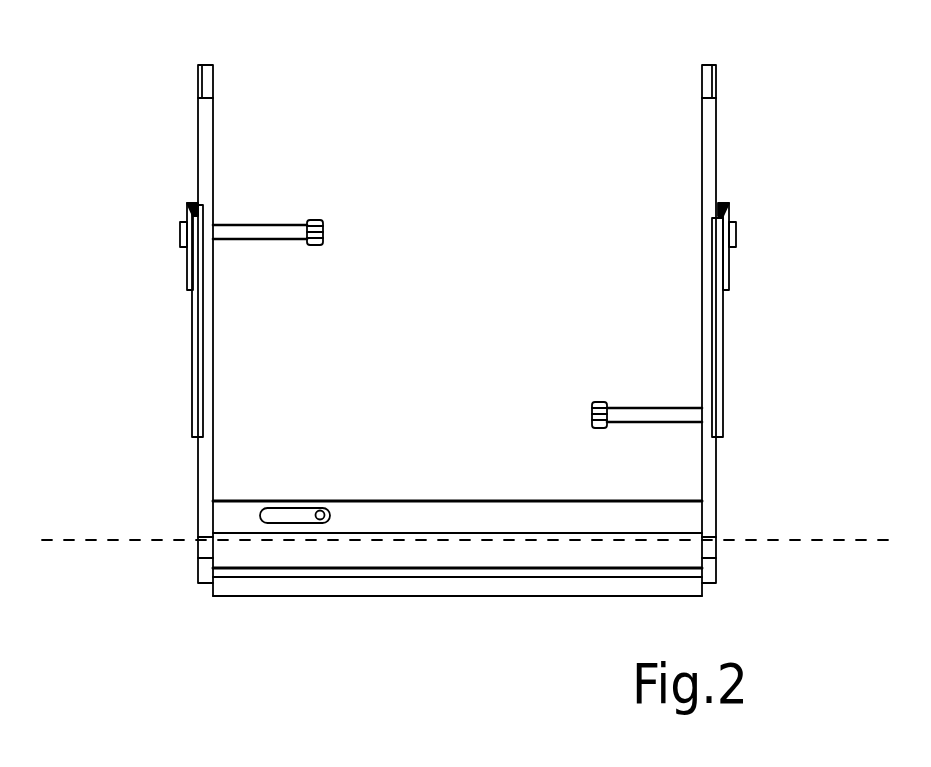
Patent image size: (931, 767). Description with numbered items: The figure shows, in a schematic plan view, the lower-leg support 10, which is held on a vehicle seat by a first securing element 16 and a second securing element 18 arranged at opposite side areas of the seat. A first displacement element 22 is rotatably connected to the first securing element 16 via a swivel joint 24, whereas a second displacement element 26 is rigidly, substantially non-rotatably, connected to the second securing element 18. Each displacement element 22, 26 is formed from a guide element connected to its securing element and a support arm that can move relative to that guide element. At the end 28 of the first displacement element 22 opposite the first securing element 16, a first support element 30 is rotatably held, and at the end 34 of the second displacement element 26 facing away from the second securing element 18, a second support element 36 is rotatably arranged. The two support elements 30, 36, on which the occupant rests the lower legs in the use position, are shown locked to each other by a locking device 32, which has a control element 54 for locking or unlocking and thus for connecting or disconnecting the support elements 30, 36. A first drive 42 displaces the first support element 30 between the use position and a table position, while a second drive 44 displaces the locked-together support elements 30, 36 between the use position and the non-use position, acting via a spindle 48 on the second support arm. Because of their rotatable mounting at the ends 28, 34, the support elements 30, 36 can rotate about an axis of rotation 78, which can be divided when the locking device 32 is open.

The lower-leg support 10 is at (155, 113).
The first securing element 16 is at (146, 227).
The second securing element 18 is at (729, 278).
The first displacement element 22 is at (153, 295).
The swivel joint 24 is at (190, 205).
The second displacement element 26 is at (770, 295).
The end of the first displacement element 28 is at (197, 550).
The first support element 30 is at (325, 553).
The locking device 32 is at (457, 481).
The end of the second displacement element 34 is at (716, 550).
The second support element 36 is at (555, 553).
The first drive 42 is at (313, 221).
The second drive 44 is at (626, 383).
The spindle 48 is at (670, 409).
The control element 54 is at (320, 510).
The axis of rotation 78 is at (92, 538).